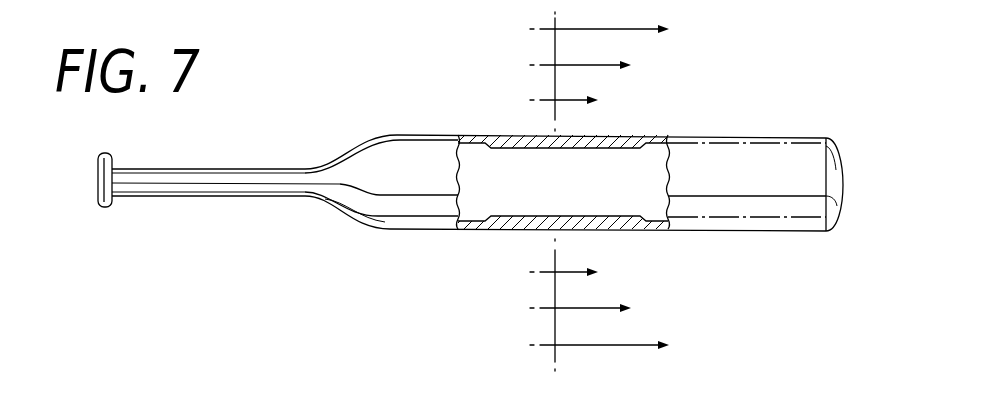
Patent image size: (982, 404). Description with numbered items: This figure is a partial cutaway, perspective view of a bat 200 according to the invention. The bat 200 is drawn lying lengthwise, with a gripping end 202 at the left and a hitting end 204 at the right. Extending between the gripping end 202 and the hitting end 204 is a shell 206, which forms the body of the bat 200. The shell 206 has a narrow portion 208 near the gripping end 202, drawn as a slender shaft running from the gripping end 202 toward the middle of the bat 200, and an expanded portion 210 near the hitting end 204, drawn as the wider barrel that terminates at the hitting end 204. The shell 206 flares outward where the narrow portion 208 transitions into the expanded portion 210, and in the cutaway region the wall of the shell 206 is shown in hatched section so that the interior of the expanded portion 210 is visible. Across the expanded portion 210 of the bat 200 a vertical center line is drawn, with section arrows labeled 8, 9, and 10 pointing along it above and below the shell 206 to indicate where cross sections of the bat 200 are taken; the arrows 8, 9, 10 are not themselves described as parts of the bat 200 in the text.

The bat 200 is at (322, 105).
The gripping end 202 is at (106, 216).
The hitting end 204 is at (840, 146).
The shell 206 is at (354, 226).
The narrow portion 208 is at (227, 197).
The expanded portion 210 is at (722, 232).
The section line for FIG. 8 is at (575, 187).
The section line for FIG. 9 is at (591, 187).
The section line for FIG. 10 is at (618, 188).